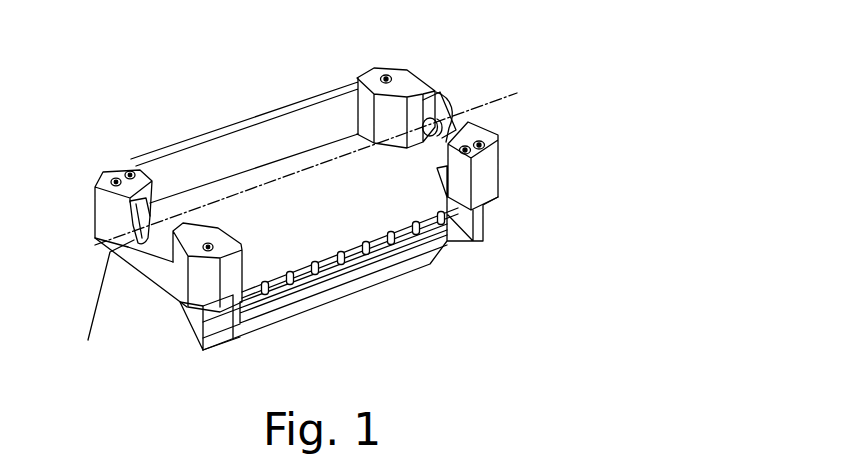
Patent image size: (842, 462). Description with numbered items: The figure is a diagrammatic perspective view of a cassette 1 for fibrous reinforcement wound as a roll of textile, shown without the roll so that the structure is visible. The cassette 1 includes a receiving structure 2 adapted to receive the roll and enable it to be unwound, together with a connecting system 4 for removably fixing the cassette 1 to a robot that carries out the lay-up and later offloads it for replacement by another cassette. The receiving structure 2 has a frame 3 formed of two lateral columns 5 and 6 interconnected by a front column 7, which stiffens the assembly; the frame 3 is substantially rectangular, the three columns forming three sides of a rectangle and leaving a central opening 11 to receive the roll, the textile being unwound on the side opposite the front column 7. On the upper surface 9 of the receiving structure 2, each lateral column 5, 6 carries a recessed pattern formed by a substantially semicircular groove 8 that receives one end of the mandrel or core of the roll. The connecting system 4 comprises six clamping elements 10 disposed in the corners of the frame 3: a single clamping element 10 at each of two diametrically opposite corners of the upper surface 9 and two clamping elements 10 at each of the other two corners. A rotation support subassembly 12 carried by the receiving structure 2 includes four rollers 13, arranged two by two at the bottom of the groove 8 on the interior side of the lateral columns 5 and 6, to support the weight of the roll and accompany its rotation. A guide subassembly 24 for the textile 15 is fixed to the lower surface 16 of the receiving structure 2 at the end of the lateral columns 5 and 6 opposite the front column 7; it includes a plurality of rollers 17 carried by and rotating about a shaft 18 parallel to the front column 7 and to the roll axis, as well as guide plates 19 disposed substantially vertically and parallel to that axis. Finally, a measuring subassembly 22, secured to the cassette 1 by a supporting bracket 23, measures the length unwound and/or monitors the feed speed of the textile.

The cassette 1 is at (466, 37).
The receiving structure 2 is at (500, 184).
The frame 3 is at (198, 136).
The connecting system 4 is at (128, 171).
The lateral column 5 is at (153, 262).
The lateral column 6 is at (434, 110).
The front column 7 is at (292, 128).
The groove 8 is at (134, 228).
The upper surface 9 is at (413, 84).
The clamping element 10 is at (114, 178).
The central opening 11 is at (298, 198).
The rotation support subassembly 12 is at (130, 214).
The roller 13 is at (470, 118).
The textile 15 is at (231, 338).
The lower surface 16 is at (110, 255).
The roller 17 is at (372, 268).
The shaft 18 is at (460, 245).
The plate 19 is at (283, 316).
The measuring subassembly 22 is at (200, 345).
The supporting bracket 23 is at (200, 343).
The guide subassembly 24 is at (486, 243).